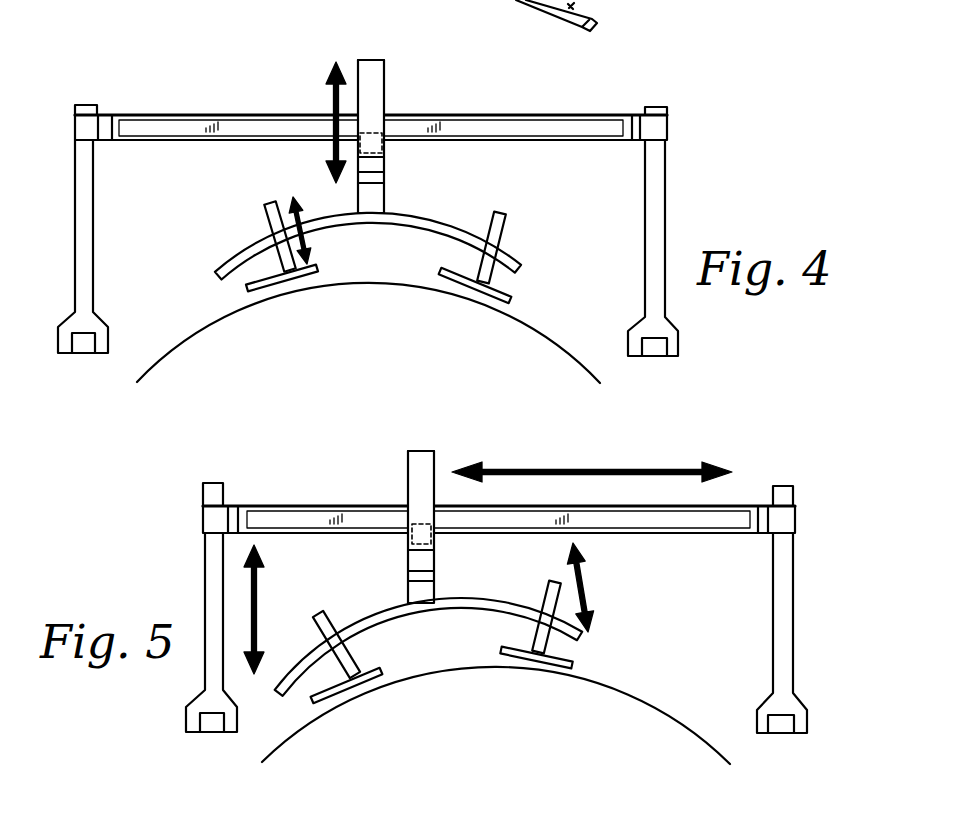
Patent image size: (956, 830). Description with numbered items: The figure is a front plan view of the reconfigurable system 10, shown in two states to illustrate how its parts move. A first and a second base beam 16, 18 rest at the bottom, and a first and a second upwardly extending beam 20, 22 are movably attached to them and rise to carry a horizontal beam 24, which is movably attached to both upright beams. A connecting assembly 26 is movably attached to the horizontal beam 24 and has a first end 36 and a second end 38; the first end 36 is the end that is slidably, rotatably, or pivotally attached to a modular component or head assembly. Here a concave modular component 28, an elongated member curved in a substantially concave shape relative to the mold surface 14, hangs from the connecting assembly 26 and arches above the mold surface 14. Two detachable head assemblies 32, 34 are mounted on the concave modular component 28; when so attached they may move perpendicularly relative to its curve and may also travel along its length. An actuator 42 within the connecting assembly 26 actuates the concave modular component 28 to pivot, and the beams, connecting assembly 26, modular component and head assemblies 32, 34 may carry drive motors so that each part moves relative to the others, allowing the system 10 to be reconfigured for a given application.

In FIG. 4, the reconfigurable system 10 is at (186, 35).
In FIG. 5, the reconfigurable system 10 is at (755, 430).
In FIG. 4, the mold surface 14 is at (545, 322).
In FIG. 5, the mold surface 14 is at (672, 713).
In FIG. 4, the first base beam 16 is at (82, 345).
In FIG. 5, the first base beam 16 is at (213, 725).
In FIG. 4, the second base beam 18 is at (655, 347).
In FIG. 5, the second base beam 18 is at (780, 722).
In FIG. 4, the first upwardly extending beam 20 is at (80, 218).
In FIG. 5, the first upwardly extending beam 20 is at (208, 562).
In FIG. 4, the second upwardly extending beam 22 is at (656, 215).
In FIG. 5, the second upwardly extending beam 22 is at (785, 563).
In FIG. 4, the horizontal beam 24 is at (250, 130).
In FIG. 5, the horizontal beam 24 is at (270, 520).
In FIG. 4, the connecting assembly 26 is at (375, 97).
In FIG. 5, the connecting assembly 26 is at (425, 487).
In FIG. 4, the concave modular component 28 is at (440, 232).
In FIG. 5, the concave modular component 28 is at (490, 610).
In FIG. 4, the detachable head assembly 32 is at (321, 273).
In FIG. 5, the detachable head assembly 32 is at (366, 678).
In FIG. 4, the detachable head assembly 34 is at (448, 283).
In FIG. 5, the detachable head assembly 34 is at (518, 660).
In FIG. 4, the first end 36 is at (357, 162).
In FIG. 5, the first end 36 is at (408, 568).
In FIG. 4, the second end 38 is at (372, 58).
In FIG. 5, the second end 38 is at (422, 450).
In FIG. 4, the actuator 42 is at (378, 143).
In FIG. 5, the actuator 42 is at (428, 535).